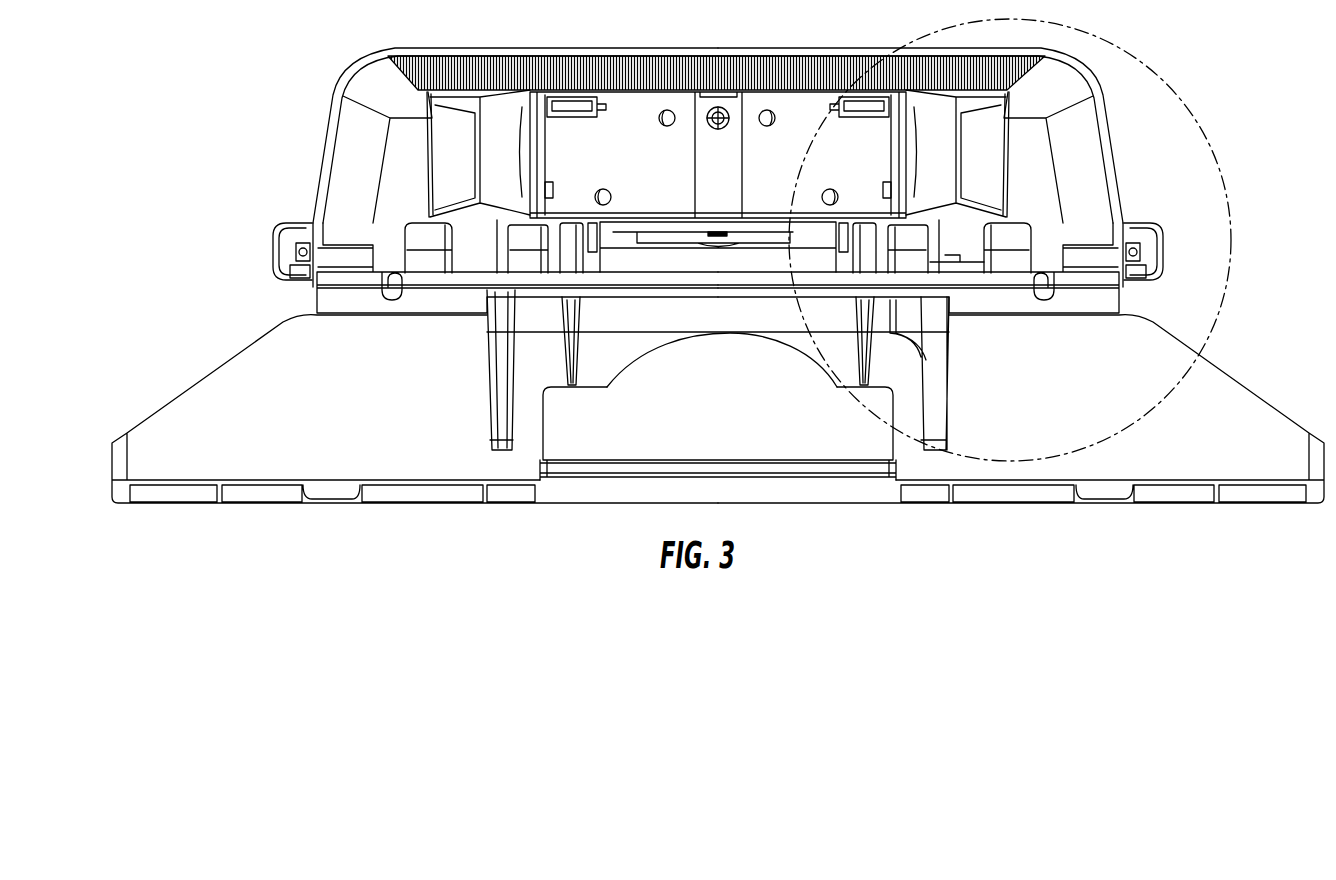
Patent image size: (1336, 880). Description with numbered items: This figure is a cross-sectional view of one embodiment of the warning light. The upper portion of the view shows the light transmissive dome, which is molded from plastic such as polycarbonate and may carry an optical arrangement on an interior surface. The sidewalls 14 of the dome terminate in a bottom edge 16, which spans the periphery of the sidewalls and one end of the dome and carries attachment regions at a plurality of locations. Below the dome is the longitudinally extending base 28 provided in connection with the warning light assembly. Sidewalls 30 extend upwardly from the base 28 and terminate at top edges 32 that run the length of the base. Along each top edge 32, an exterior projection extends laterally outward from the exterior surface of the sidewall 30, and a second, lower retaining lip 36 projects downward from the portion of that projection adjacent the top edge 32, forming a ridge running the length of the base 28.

The sidewalls 14 is at (318, 163).
The bottom edge 16 is at (307, 233).
The base 28 is at (960, 267).
The sidewalls 30 is at (310, 297).
The top edges 32 is at (307, 262).
The second retaining lip 36 is at (295, 275).